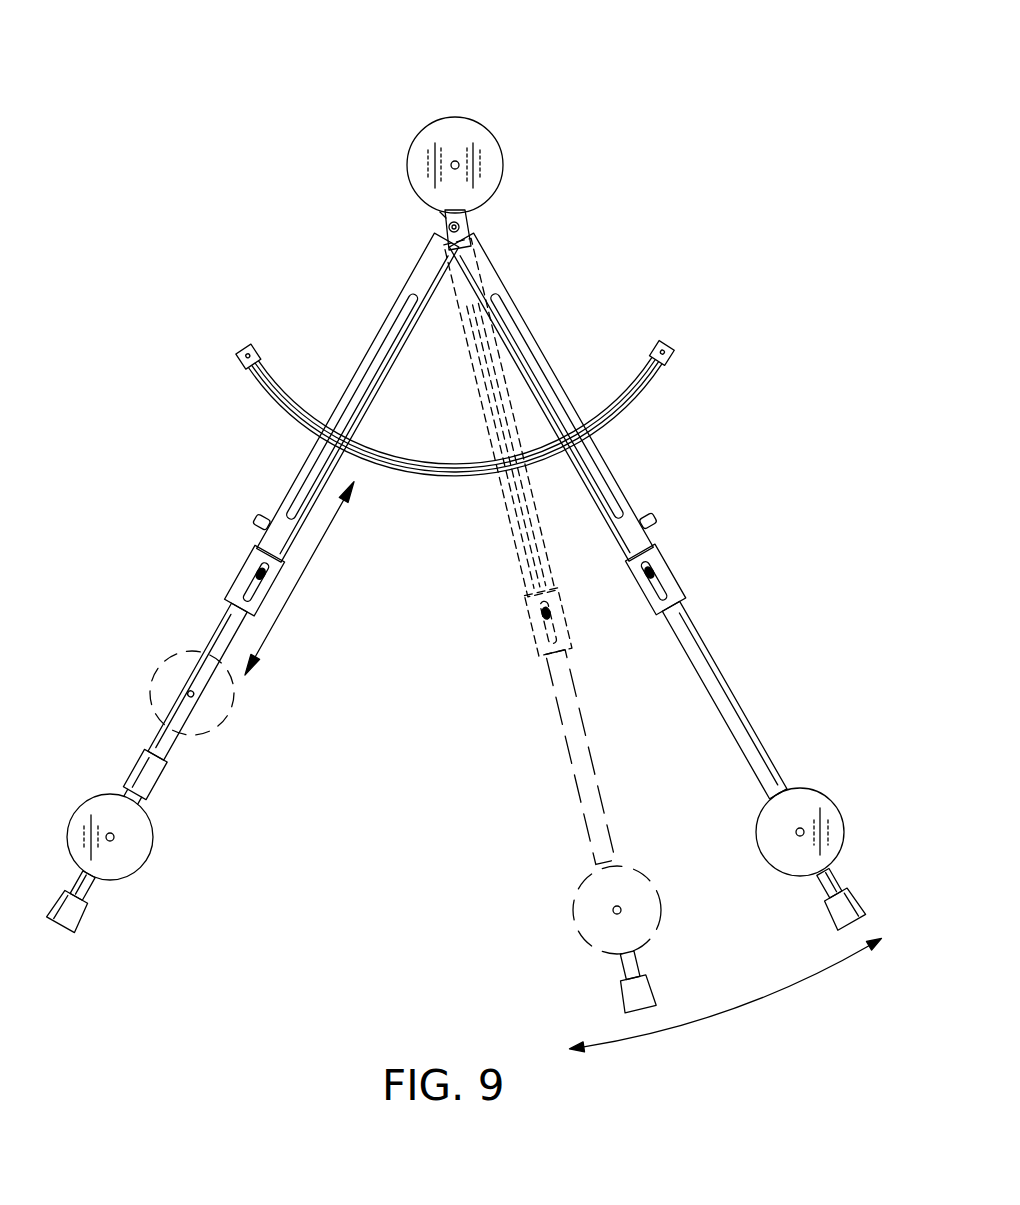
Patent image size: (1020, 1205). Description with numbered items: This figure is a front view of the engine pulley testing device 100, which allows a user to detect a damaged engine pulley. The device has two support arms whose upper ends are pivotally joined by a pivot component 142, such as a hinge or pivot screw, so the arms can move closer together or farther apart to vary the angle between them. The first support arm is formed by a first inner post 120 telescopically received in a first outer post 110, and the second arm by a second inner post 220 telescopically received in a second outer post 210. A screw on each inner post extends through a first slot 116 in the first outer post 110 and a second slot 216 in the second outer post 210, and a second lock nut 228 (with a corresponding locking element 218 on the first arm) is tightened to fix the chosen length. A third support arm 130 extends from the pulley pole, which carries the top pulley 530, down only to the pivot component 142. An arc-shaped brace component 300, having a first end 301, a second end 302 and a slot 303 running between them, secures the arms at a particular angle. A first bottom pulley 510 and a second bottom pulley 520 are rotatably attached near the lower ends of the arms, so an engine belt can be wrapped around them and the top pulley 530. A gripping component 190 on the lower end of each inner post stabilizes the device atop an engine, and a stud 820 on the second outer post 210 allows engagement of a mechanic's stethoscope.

The engine pulley testing device 100 is at (762, 186).
The first outer post 110 is at (403, 296).
The first slot 116 is at (360, 377).
The first inner post 120 is at (220, 634).
The third support arm 130 is at (445, 215).
The pivot component 142 is at (473, 215).
The gripping component 190 is at (80, 933).
The second outer post 210 is at (497, 272).
The second slot 216 is at (530, 345).
The first sleeve lock 218 is at (257, 577).
The second inner post 220 is at (730, 682).
The second lock nut 228 is at (673, 577).
The brace component 300 is at (480, 478).
The first end 301 is at (248, 362).
The second end 302 is at (667, 349).
The slot 303 is at (633, 395).
The first bottom pulley 510 is at (143, 868).
The second bottom pulley 520 is at (810, 785).
The top pulley 530 is at (477, 122).
The stud 820 is at (670, 533).